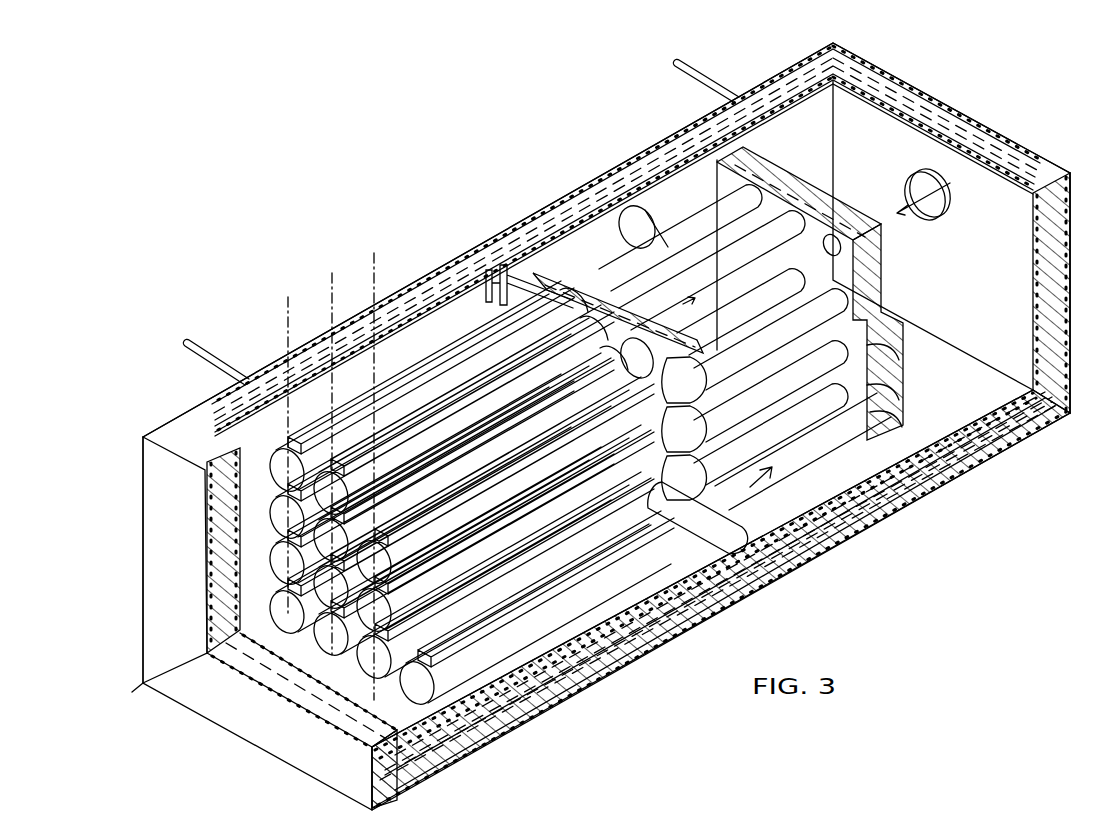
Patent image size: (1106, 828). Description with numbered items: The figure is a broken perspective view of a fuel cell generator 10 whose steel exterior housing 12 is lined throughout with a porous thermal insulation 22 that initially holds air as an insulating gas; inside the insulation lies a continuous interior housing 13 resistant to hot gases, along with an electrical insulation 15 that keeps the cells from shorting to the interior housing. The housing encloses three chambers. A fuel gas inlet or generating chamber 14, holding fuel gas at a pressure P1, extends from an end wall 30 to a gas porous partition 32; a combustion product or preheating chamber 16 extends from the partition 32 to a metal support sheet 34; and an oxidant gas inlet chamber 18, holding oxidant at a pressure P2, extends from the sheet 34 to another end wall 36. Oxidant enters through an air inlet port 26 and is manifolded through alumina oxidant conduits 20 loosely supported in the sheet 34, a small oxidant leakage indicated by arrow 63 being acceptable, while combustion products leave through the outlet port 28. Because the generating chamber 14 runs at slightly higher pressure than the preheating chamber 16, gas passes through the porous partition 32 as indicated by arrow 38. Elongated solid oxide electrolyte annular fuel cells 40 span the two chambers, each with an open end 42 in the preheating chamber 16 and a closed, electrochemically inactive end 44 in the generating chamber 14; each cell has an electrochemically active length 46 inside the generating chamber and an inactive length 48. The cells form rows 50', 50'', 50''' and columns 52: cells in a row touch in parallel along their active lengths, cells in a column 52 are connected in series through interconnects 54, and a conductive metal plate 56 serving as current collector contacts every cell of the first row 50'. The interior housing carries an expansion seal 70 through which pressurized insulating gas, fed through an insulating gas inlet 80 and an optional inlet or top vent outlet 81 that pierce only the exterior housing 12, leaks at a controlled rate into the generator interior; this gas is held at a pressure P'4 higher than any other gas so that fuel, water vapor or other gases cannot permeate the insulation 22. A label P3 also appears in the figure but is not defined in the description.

The fuel cell generator 10 is at (601, 426).
The exterior housing 12 is at (922, 100).
The interior housing 13 is at (800, 93).
The fuel gas inlet or electrical energy generating chamber 14 is at (412, 350).
The electrical insulation 15 is at (427, 317).
The combustion product or preheating chamber 16 is at (608, 230).
The oxidant gas inlet chamber 18 is at (780, 244).
The oxidant conduits 20 is at (792, 268).
The thermal insulation 22 is at (867, 80).
The air inlet port 26 is at (937, 212).
The combustion product outlet port 28 is at (650, 230).
The end wall 30 is at (153, 518).
The gas porous partition 32 is at (683, 333).
The metal sheet 34 is at (775, 163).
The end wall 36 is at (953, 130).
The arrow 38 is at (663, 307).
The solid oxide electrolyte annular fuel cells 40 is at (473, 407).
The open ends 42 is at (597, 270).
The closed ends 44 is at (280, 527).
The electrochemically active length 46 is at (547, 607).
The inactive length 48 is at (730, 517).
The first row 50' is at (721, 599).
The floor layer 50'' is at (715, 586).
The floor layer 50''' is at (725, 598).
The columns 52 is at (288, 297).
The interconnect 54 is at (368, 396).
The conductive metal plate 56 is at (585, 640).
The arrow 63 is at (900, 363).
The seal 70 is at (500, 263).
The insulating gas inlet 80 is at (213, 357).
The insulating gas inlet or top vent outlet 81 is at (712, 84).
The fuel gas pressure P1 is at (123, 708).
The oxidant gas pressure P2 is at (1017, 145).
The section plane P3 is at (553, 183).
The insulating gas pressure P'4 is at (405, 191).